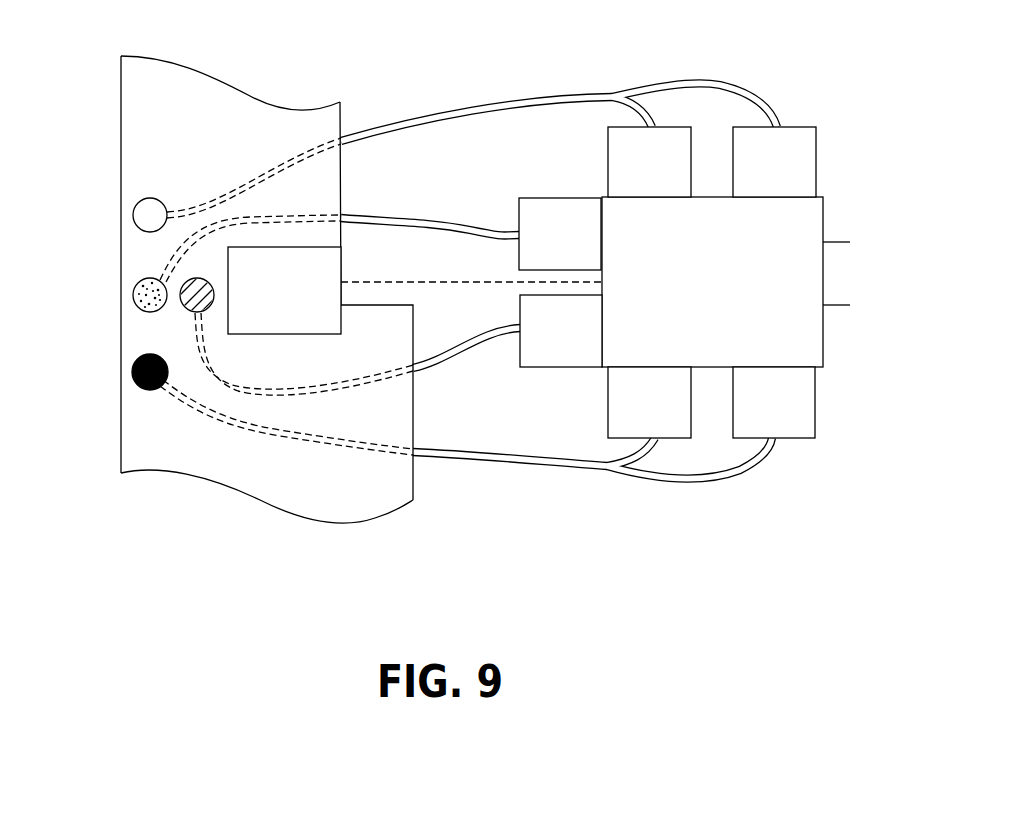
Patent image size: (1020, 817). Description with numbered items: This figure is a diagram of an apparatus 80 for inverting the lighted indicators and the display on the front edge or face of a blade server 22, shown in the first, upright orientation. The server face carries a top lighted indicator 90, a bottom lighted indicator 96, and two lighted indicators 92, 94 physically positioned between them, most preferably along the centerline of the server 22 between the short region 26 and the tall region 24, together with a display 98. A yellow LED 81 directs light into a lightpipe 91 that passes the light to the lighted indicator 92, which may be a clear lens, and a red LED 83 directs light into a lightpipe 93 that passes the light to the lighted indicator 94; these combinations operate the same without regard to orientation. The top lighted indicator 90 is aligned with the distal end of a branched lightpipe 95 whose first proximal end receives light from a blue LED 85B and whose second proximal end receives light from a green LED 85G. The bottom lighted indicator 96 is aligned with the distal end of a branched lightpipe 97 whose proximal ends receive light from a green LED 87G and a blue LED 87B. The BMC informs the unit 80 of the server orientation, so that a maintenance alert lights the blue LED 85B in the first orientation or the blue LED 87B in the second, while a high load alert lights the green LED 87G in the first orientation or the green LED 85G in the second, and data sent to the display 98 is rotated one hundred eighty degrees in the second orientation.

The blade server 22 is at (121, 129).
The tall region 24 is at (300, 494).
The short region 26 is at (166, 137).
The apparatus 80 is at (573, 82).
The yellow LED 81 is at (556, 198).
The red LED 83 is at (571, 367).
The blue LED 85B is at (608, 164).
The green LED 85G is at (816, 165).
The green LED 87G is at (608, 398).
The blue LED 87B is at (815, 395).
The lighted indicator 90 is at (133, 215).
The lightpipe 91 is at (432, 222).
The lighted indicator 92 is at (132, 295).
The lightpipe 93 is at (452, 346).
The lighted indicator 94 is at (186, 307).
The lightpipe 95 is at (462, 108).
The lighted indicator 96 is at (132, 373).
The lightpipe 97 is at (521, 467).
The display 98 is at (269, 312).